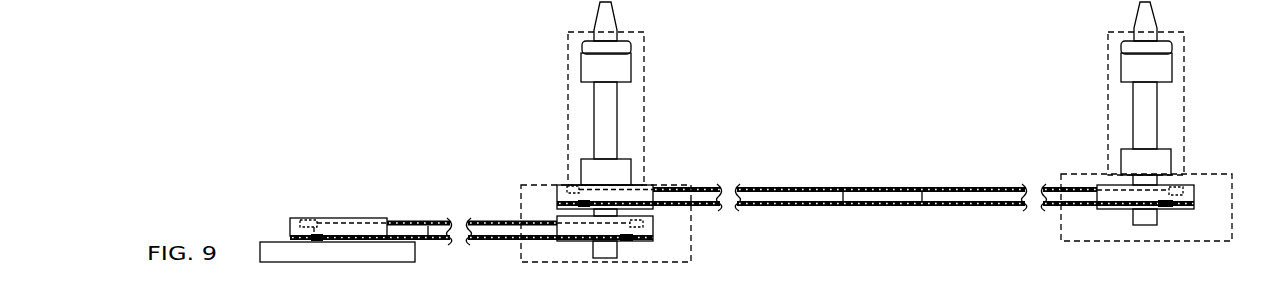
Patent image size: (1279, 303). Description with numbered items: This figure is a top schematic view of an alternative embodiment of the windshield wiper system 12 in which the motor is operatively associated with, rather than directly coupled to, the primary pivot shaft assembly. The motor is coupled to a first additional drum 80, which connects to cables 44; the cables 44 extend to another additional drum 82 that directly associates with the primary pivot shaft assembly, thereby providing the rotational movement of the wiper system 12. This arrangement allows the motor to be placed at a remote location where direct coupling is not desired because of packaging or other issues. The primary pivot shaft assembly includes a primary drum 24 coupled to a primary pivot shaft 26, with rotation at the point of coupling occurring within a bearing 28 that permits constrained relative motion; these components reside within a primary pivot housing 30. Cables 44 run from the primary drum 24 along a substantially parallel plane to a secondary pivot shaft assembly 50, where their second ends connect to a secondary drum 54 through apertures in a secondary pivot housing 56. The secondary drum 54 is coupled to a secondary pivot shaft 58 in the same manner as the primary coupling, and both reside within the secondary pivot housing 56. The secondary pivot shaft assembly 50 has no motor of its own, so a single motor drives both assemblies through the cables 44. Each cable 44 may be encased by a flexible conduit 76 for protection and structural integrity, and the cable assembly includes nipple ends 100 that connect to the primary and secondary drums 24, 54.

The wiper system 12 is at (776, 142).
The primary drum 24 is at (557, 197).
The primary pivot shaft 26 is at (608, 117).
The bearing 28 is at (618, 171).
The primary pivot housing 30 is at (567, 68).
The cable 44 is at (424, 221).
The secondary pivot shaft assembly 50 is at (1198, 101).
The secondary drum 54 is at (1184, 185).
The secondary pivot housing 56 is at (1185, 44).
The secondary pivot shaft 58 is at (1143, 105).
The flexible conduit 76 is at (478, 242).
The first additional drum 80 is at (297, 217).
The additional drum 82 is at (655, 224).
The nipple ends 100 is at (310, 219).